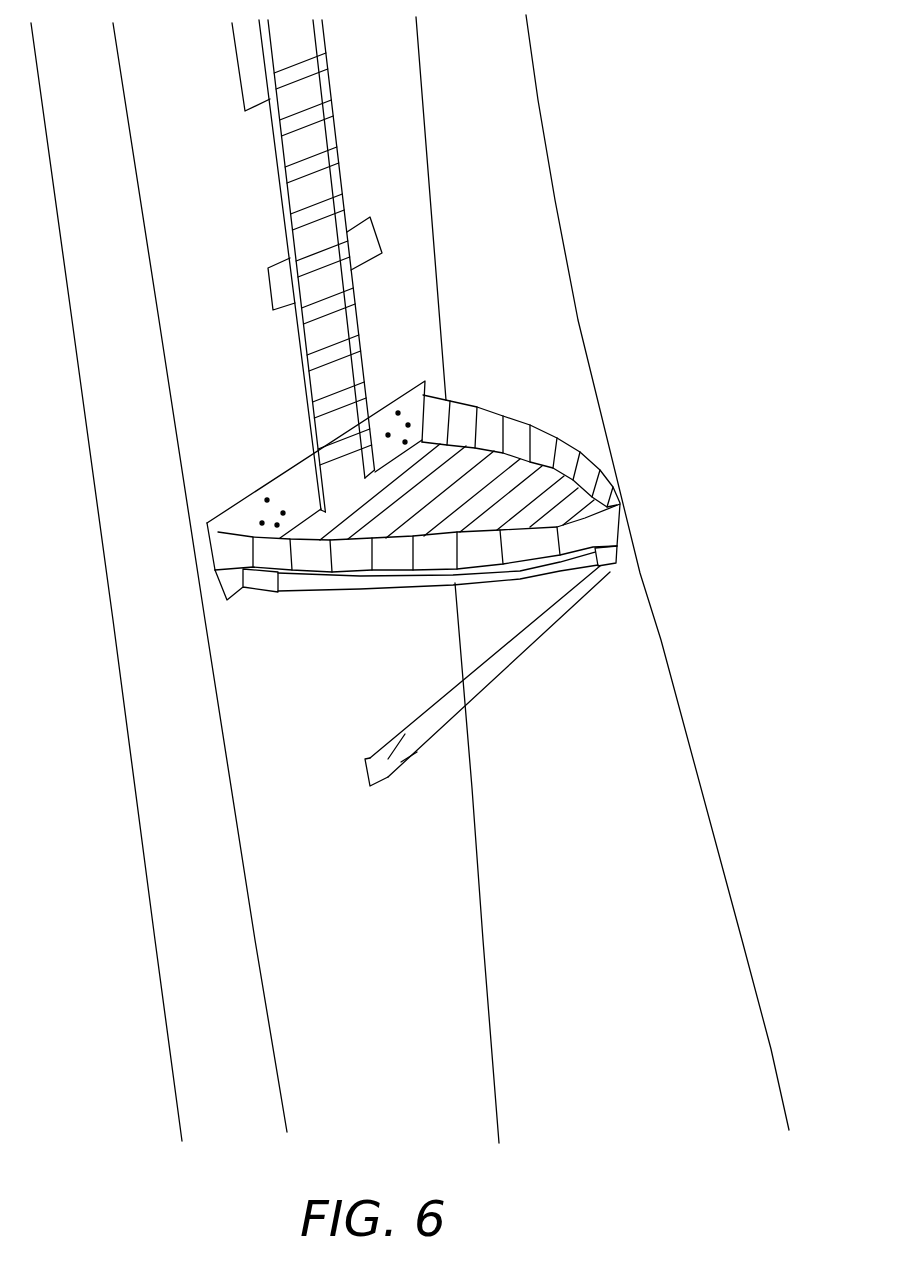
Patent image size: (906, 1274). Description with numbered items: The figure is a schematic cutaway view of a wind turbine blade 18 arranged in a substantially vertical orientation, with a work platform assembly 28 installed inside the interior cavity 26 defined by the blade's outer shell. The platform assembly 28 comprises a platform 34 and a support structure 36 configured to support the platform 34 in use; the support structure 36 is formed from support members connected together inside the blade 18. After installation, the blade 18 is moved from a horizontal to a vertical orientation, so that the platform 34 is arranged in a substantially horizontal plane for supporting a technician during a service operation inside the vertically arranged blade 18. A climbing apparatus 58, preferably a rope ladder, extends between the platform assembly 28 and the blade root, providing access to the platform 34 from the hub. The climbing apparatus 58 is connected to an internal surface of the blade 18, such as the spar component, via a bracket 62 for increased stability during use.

The wind turbine blade 18 is at (604, 322).
The interior cavity 26 is at (567, 757).
The work platform assembly 28 is at (471, 372).
The platform 34 is at (387, 523).
The support structure 36 is at (437, 603).
The climbing apparatus 58 is at (253, 200).
The bracket 62 is at (364, 240).